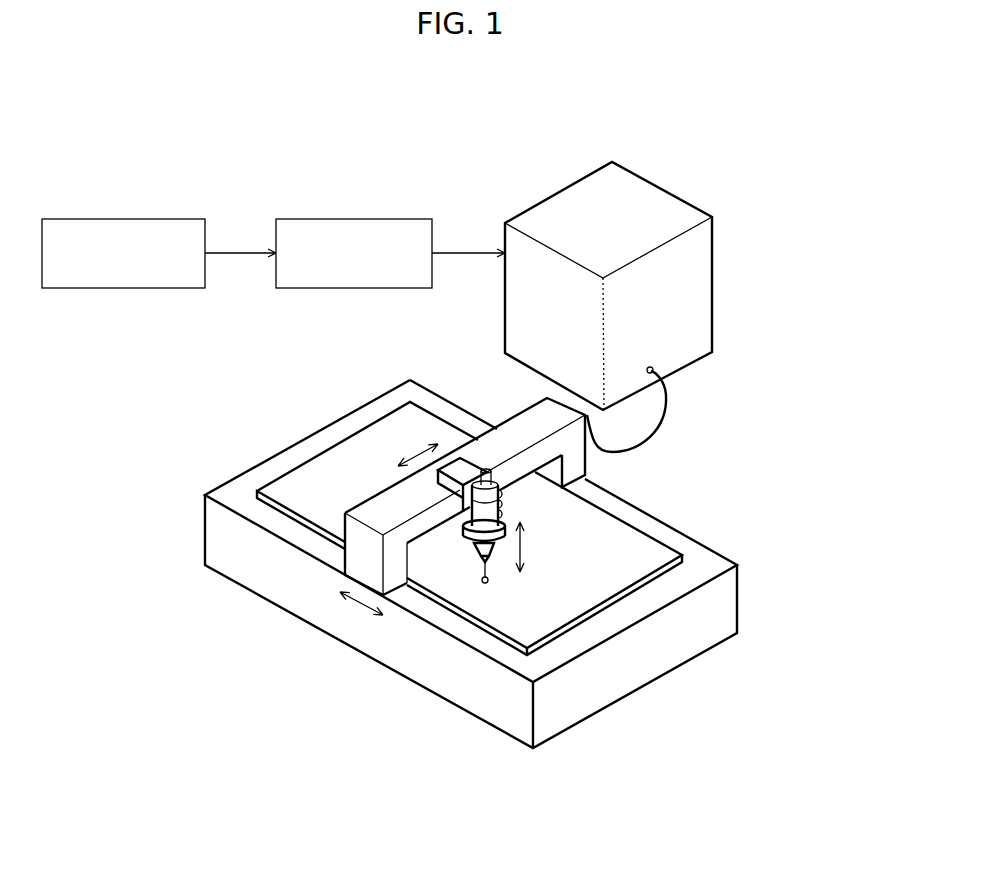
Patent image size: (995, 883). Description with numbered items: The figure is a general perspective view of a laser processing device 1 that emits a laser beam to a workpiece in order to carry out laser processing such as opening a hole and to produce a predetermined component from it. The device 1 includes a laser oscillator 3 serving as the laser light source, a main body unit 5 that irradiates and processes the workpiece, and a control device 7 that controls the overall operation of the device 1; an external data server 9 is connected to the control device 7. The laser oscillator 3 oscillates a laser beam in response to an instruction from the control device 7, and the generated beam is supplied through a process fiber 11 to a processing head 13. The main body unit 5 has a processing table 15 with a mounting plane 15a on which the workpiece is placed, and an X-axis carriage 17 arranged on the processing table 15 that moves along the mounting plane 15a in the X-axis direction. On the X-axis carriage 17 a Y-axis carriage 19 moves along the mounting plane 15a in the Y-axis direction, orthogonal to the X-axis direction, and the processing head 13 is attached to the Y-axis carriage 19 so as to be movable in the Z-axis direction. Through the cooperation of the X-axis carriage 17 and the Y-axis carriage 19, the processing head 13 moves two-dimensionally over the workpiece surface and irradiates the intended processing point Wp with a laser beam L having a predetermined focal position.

The laser processing device 1 is at (792, 431).
The laser oscillator 3 is at (714, 280).
The main body unit 5 is at (211, 445).
The control device 7 is at (368, 219).
The external data server 9 is at (137, 219).
The process fiber 11 is at (520, 440).
The processing head 13 is at (467, 537).
The processing table 15 is at (733, 598).
The mounting plane 15a is at (702, 555).
The X-axis carriage 17 is at (355, 560).
The Y-axis carriage 19 is at (465, 468).
The laser beam L is at (488, 574).
The processing point Wp is at (477, 590).